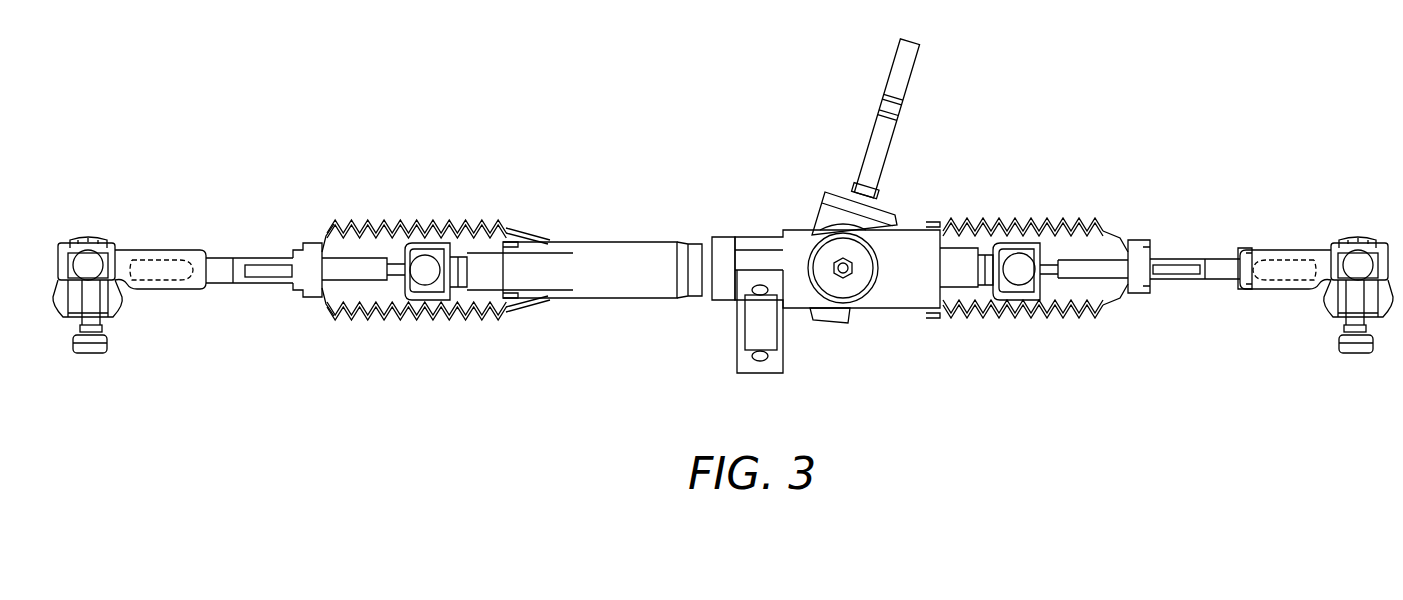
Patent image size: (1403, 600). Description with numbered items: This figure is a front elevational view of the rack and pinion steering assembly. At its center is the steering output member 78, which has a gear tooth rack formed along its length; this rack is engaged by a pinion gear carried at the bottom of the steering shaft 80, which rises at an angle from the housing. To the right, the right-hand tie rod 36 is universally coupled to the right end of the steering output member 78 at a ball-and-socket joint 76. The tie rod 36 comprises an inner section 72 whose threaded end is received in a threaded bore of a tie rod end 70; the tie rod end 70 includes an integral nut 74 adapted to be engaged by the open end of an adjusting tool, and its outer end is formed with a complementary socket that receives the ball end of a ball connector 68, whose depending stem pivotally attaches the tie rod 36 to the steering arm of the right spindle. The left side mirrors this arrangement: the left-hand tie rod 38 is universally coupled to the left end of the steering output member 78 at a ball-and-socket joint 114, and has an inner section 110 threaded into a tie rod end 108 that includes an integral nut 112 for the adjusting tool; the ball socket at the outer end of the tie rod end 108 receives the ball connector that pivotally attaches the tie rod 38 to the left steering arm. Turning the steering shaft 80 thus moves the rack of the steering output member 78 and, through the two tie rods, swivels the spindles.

The right-hand tie rod 36 is at (240, 256).
The left-hand tie rod 38 is at (1218, 257).
The ball connector 68 is at (98, 327).
The tie rod end 70 is at (123, 250).
The inner section 72 is at (270, 257).
The integral nut 74 is at (207, 292).
The ball-and-socket joint 76 is at (423, 230).
The steering output member 78 is at (527, 267).
The steering shaft 80 is at (908, 63).
The tie rod end 108 is at (1297, 250).
The inner section 110 is at (1083, 262).
The integral nut 112 is at (1243, 290).
The ball-and-socket joint 114 is at (1020, 243).